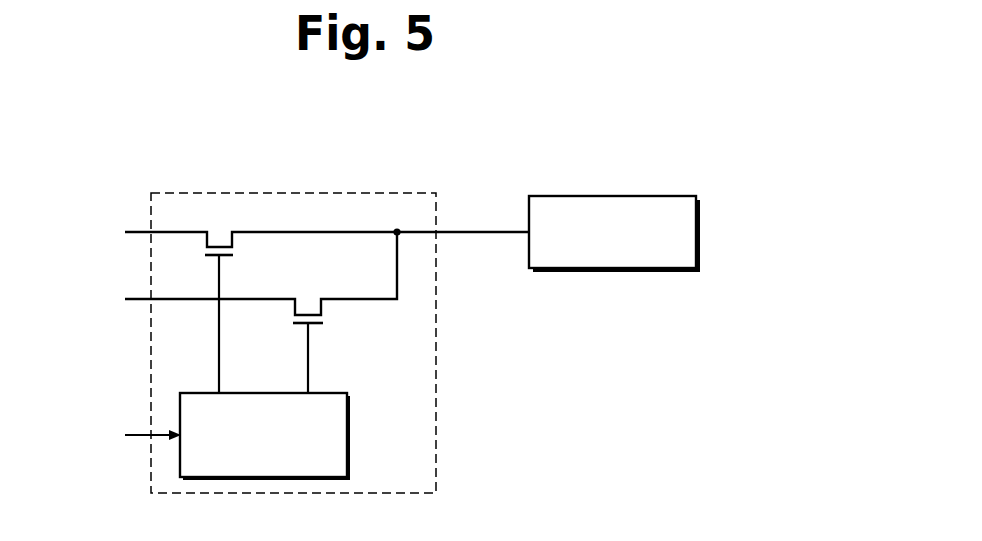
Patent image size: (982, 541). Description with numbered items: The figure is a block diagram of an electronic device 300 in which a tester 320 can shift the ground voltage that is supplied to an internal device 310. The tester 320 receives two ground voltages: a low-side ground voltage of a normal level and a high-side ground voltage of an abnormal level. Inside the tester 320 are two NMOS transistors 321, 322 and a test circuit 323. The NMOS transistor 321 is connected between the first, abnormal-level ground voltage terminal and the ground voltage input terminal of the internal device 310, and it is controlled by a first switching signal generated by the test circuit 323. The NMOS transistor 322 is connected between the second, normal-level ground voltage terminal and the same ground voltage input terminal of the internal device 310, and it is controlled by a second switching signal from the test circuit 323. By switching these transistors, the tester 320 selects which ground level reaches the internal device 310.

The electronic device 300 is at (705, 106).
The internal device 310 is at (672, 196).
The tester 320 is at (436, 384).
The NMOS transistor 321 is at (261, 300).
The NMOS transistor 322 is at (263, 310).
The test circuit 323 is at (348, 433).